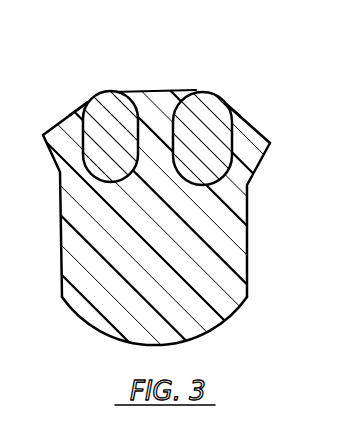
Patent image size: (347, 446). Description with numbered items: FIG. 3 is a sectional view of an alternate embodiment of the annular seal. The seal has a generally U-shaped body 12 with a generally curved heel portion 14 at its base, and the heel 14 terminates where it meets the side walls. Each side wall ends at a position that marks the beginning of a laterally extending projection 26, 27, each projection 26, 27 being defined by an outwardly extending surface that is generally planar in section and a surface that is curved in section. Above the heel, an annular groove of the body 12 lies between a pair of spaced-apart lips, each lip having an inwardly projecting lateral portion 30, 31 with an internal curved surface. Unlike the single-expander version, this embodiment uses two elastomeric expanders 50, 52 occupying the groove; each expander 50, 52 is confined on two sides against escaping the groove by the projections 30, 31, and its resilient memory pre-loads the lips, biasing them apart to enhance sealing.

The body 12 is at (248, 237).
The heel portion 14 is at (183, 346).
The laterally extending projection 26 is at (62, 146).
The laterally extending projection 27 is at (266, 134).
The inwardly projecting lateral portion 30 is at (83, 108).
The inwardly projecting lateral portion 31 is at (115, 92).
The elastomeric expander ring 50 is at (107, 102).
The expander 52 is at (207, 98).